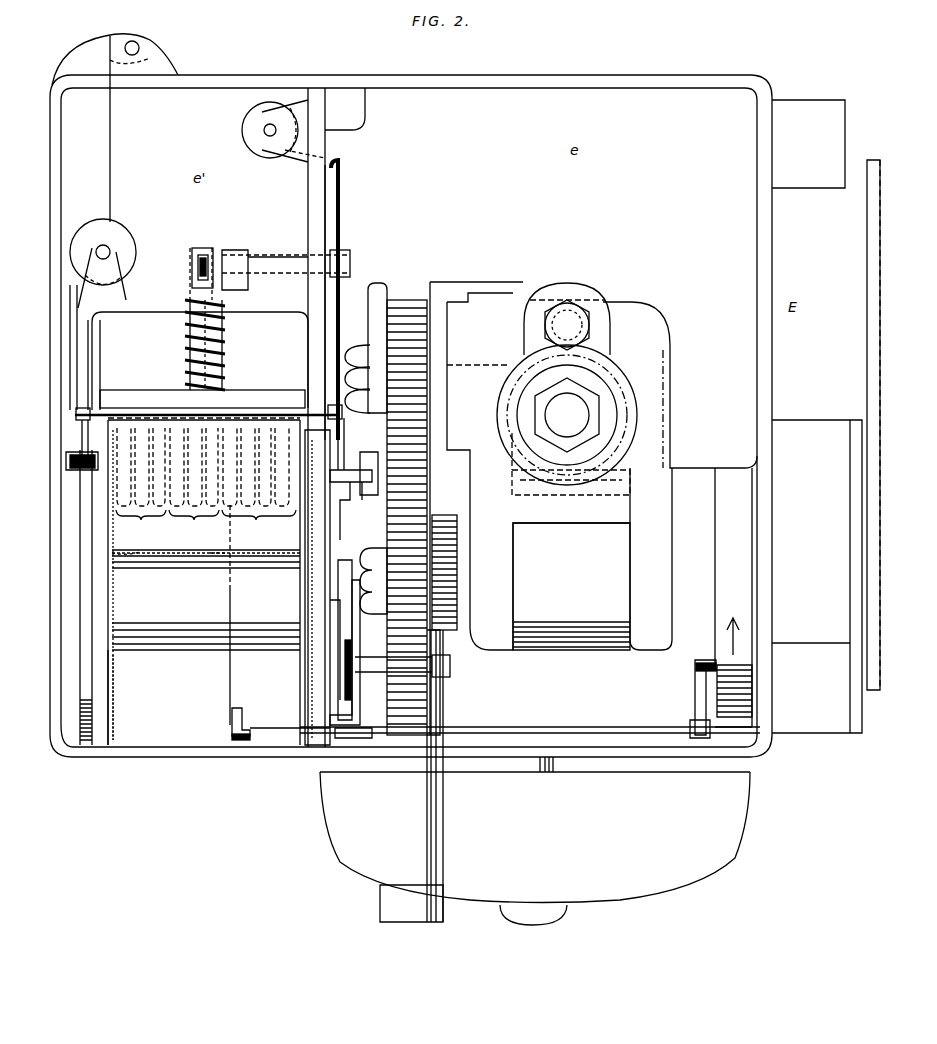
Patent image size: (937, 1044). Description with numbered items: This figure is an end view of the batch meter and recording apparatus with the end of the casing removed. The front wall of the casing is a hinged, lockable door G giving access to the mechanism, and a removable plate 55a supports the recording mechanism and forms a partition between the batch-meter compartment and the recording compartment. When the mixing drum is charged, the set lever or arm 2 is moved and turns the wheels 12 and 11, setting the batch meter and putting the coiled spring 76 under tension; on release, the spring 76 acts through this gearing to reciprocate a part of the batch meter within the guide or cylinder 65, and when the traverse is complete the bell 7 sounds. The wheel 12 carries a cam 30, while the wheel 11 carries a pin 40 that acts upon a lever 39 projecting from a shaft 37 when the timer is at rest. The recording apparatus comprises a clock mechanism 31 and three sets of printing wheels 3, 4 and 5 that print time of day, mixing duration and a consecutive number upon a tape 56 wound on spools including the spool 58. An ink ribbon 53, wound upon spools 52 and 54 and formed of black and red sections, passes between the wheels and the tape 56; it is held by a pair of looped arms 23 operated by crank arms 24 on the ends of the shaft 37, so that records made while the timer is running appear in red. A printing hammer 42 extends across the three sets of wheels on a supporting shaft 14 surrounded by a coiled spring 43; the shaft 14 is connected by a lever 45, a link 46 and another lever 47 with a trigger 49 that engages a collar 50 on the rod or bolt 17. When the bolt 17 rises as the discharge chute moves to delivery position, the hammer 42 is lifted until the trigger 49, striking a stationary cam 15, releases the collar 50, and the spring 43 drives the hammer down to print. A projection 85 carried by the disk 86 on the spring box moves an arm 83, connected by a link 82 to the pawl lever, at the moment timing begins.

The set lever or arm 2 is at (867, 238).
The printing wheels 3 is at (141, 482).
The printing wheels 4 is at (194, 482).
The printing wheels 5 is at (259, 482).
The bell 7 is at (685, 877).
The wheel 11 is at (420, 680).
The wheel 12 is at (405, 302).
The supporting shaft 14 is at (215, 340).
The stationary cam 15 is at (330, 552).
The rod or bolt 17 is at (436, 708).
The arms 23 is at (76, 410).
The crank arms 24 is at (80, 440).
The cam 30 is at (376, 290).
The clock mechanism 31 is at (80, 634).
The shaft 37 is at (68, 465).
The lever 39 is at (378, 483).
The pin 40 is at (385, 510).
The printing hammer 42 is at (150, 392).
The coiled spring 43 is at (185, 338).
The lever 45 is at (192, 263).
The link 46 is at (320, 683).
The lever 47 is at (340, 742).
The trigger 49 is at (322, 615).
The collar 50 is at (450, 665).
The spool 52 is at (115, 225).
The ink ribbon 53 is at (70, 287).
The spool 54 is at (242, 125).
The plate 55a is at (322, 190).
The tape 56 is at (168, 560).
The spool 58 is at (113, 686).
The guide or cylinder 65 is at (620, 383).
The coiled spring 76 is at (571, 586).
The link 82 is at (228, 675).
The arm 83 is at (234, 725).
The projection 85 is at (693, 665).
The disk 86 is at (717, 700).
The hinged door G is at (50, 180).